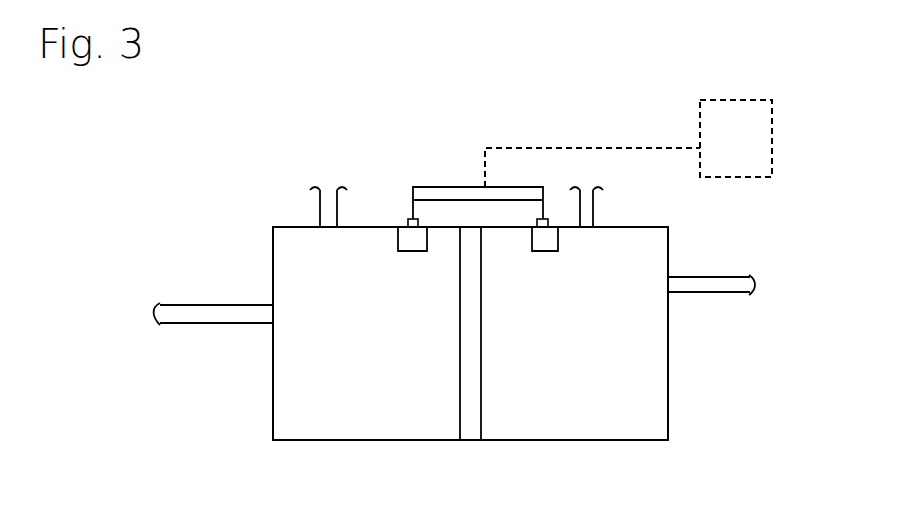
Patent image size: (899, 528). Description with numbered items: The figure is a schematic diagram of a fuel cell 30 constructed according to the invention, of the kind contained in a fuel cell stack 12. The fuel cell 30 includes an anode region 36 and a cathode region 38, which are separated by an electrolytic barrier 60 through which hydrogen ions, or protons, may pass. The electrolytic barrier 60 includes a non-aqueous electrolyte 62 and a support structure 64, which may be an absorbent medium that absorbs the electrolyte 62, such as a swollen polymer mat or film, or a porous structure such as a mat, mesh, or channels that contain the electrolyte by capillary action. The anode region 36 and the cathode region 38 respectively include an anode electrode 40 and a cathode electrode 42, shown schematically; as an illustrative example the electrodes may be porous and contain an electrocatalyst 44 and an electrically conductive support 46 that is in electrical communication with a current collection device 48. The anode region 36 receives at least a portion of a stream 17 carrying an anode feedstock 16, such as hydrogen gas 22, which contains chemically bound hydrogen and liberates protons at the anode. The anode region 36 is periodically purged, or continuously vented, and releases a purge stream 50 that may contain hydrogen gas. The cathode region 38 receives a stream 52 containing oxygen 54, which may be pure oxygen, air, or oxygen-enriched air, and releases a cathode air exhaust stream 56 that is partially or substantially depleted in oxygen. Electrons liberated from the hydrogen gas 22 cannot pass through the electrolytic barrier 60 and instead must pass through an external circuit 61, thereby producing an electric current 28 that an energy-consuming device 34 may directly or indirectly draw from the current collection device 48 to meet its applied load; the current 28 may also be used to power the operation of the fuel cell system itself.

The fuel cell stack 12 is at (265, 147).
The anode feedstock 16 is at (205, 310).
The stream 17 is at (242, 326).
The hydrogen gas 22 is at (252, 300).
The electric current 28 is at (585, 144).
The fuel cell 30 is at (259, 243).
The energy-consuming device 34 is at (720, 96).
The anode region 36 is at (444, 422).
The cathode region 38 is at (649, 422).
The anode electrode 40 is at (395, 243).
The cathode electrode 42 is at (562, 242).
The electrocatalyst 44 is at (413, 253).
The electrically conductive support 46 is at (406, 220).
The current collection device 48 is at (497, 186).
The purge stream 50 is at (316, 210).
The stream containing oxygen 52 is at (711, 283).
The oxygen 54 is at (700, 273).
The cathode air exhaust stream 56 is at (597, 195).
The electrolytic barrier 60 is at (473, 428).
The external circuit 61 is at (479, 182).
The non-aqueous electrolyte 62 is at (475, 404).
The support structure 64 is at (508, 362).